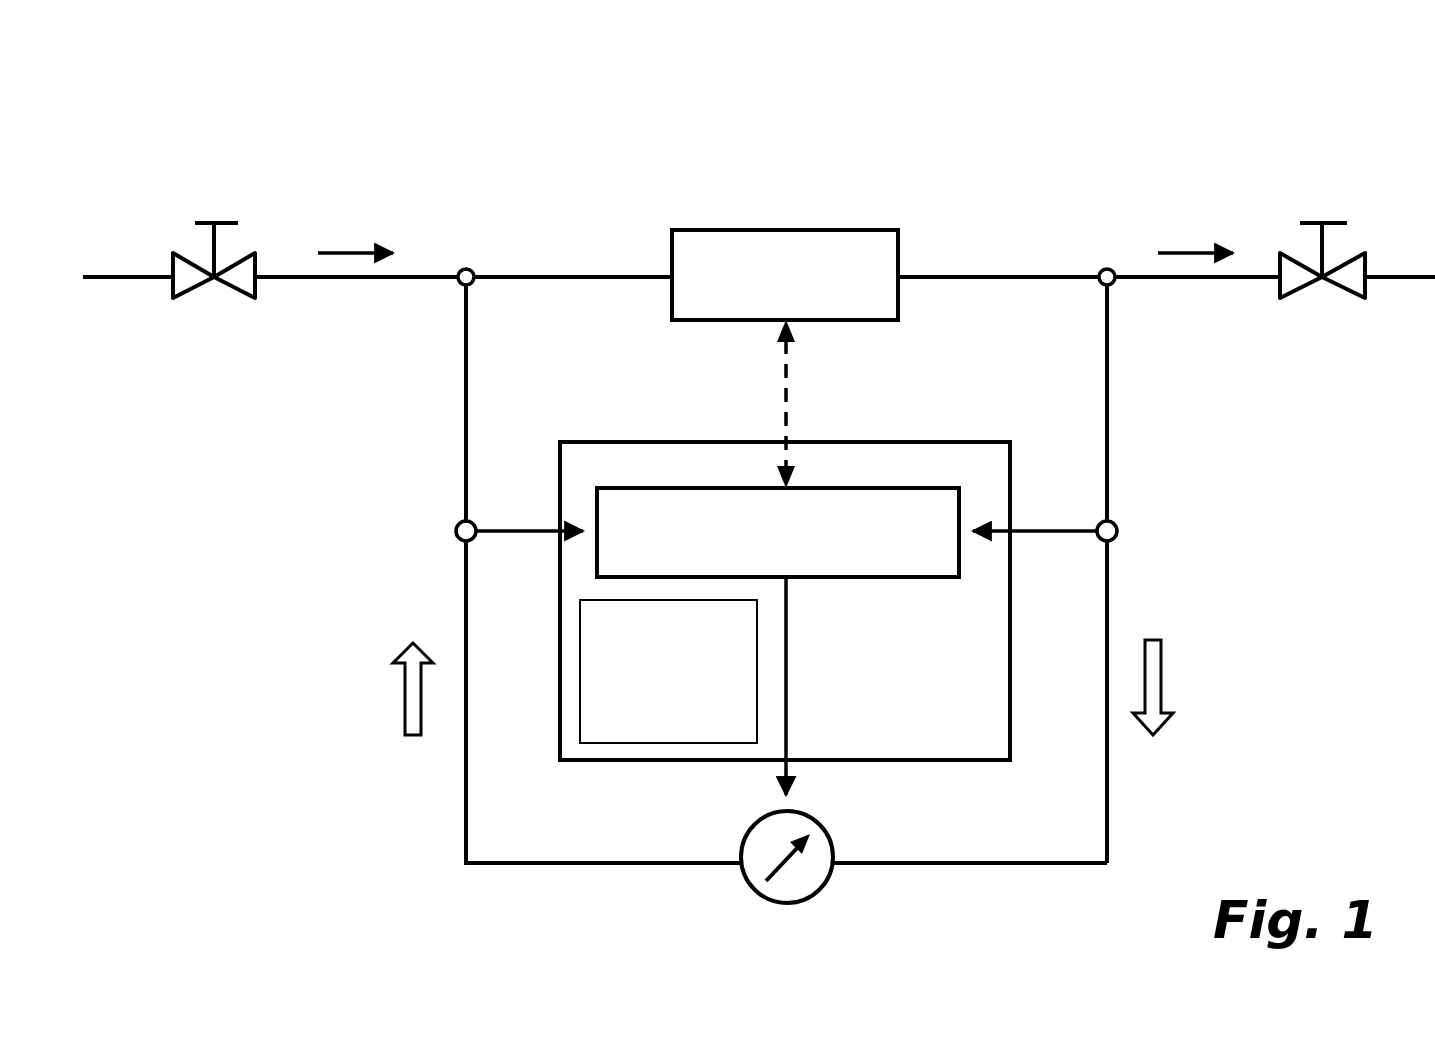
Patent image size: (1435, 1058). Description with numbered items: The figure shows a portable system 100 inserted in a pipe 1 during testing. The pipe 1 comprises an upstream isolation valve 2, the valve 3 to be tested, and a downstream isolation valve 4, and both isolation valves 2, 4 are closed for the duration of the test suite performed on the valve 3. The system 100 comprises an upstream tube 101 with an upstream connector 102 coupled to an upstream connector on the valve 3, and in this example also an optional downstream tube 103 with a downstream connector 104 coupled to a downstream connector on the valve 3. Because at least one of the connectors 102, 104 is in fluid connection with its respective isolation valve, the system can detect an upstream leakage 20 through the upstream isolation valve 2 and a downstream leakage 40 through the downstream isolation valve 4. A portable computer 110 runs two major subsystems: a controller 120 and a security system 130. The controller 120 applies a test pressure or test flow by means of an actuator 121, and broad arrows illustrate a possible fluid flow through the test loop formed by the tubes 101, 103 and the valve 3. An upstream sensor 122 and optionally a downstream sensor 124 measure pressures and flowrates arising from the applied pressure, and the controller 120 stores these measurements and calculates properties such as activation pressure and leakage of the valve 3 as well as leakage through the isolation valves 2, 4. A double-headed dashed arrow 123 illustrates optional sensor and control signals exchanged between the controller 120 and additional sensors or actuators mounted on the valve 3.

The pipe 1 is at (113, 283).
The upstream isolation valve 2 is at (258, 270).
The valve 3 is at (843, 294).
The downstream isolation valve 4 is at (1342, 272).
The upstream leakage 20 is at (338, 250).
The downstream leakage 40 is at (1208, 248).
The portable system 100 is at (548, 112).
The upstream tube 101 is at (462, 425).
The upstream connector 102 is at (468, 268).
The downstream tube 103 is at (1110, 375).
The downstream connector 104 is at (1105, 268).
The portable computer 110 is at (932, 732).
The controller 120 is at (916, 548).
The actuator 121 is at (797, 830).
The upstream sensor 122 is at (440, 527).
The sensor and control signals 123 is at (786, 410).
The downstream sensor 124 is at (1118, 535).
The security system 130 is at (688, 728).